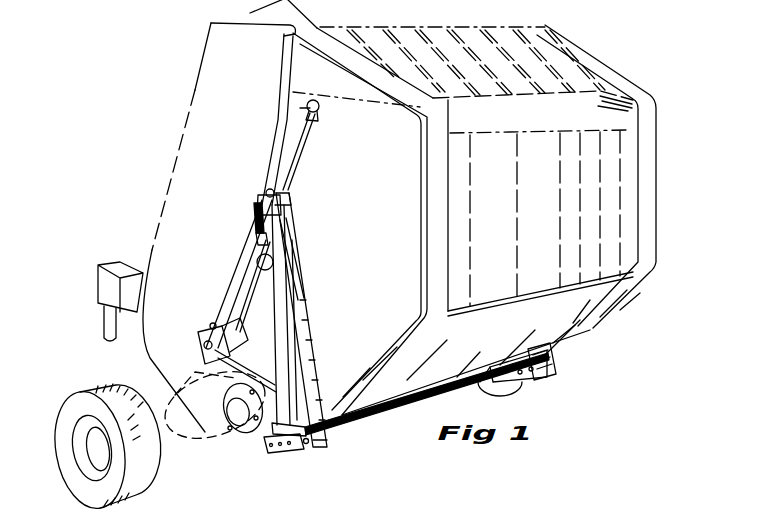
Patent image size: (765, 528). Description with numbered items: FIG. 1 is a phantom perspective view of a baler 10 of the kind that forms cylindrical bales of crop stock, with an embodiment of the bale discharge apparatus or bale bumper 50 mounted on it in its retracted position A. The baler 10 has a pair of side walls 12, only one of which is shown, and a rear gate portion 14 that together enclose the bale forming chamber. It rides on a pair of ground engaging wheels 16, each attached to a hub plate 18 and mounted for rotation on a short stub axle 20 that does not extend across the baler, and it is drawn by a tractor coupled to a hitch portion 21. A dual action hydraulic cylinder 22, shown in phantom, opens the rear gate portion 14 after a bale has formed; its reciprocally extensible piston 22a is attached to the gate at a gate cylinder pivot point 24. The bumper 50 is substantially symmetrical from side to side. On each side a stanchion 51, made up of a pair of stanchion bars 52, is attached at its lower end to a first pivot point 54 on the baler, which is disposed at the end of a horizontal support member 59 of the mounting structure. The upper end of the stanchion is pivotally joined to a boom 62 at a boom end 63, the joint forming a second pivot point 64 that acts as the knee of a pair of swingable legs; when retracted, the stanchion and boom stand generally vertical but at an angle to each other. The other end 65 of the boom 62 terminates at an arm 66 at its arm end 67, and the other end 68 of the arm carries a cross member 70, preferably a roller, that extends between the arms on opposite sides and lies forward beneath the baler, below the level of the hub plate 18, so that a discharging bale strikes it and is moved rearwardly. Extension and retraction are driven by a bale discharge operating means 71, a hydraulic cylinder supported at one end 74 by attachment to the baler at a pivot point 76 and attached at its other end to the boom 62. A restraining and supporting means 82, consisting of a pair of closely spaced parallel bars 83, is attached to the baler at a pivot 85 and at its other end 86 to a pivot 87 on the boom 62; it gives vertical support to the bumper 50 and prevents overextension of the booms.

The baler 10 is at (120, 125).
The side wall 12 is at (200, 84).
The rear gate portion 14 is at (660, 125).
The ground engaging wheel 16 is at (78, 395).
The hub plate 18 is at (222, 402).
The stub axle 20 is at (222, 430).
The hitch portion 21 is at (99, 267).
The dual action hydraulic cylinder 22 is at (297, 163).
The piston 22a is at (316, 120).
The gate cylinder pivot point 24 is at (300, 108).
The bale discharge apparatus 50 is at (264, 175).
The stanchion 51 is at (240, 230).
The stanchion bar 52 is at (256, 218).
The first pivot point 54 is at (200, 366).
The horizontal support member 59 is at (213, 384).
The boom 62 is at (312, 338).
The boom end 63 is at (282, 196).
The second pivot point 64 is at (260, 194).
The other end of boom 65 is at (308, 440).
The arm 66 is at (283, 452).
The arm end 67 is at (338, 448).
The other end of arm 68 is at (270, 450).
The cross member 70 is at (417, 400).
The bale discharge operating means 71 is at (223, 313).
The end of operating means 74 is at (212, 323).
The pivot point 76 is at (202, 333).
The restraining and supporting means 82 is at (290, 287).
The parallel bars 83 is at (277, 320).
The pivot 85 is at (254, 430).
The other end of restraining and supporting means 86 is at (288, 256).
The pivot 87 is at (262, 250).
The retracted position A is at (293, 232).